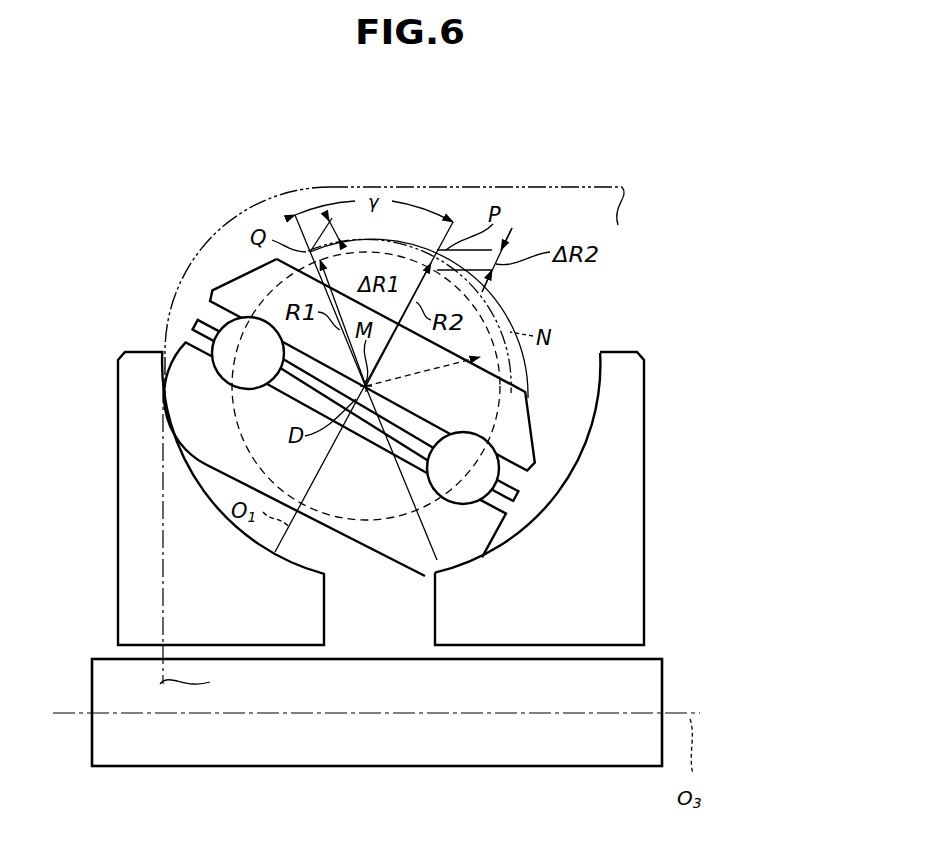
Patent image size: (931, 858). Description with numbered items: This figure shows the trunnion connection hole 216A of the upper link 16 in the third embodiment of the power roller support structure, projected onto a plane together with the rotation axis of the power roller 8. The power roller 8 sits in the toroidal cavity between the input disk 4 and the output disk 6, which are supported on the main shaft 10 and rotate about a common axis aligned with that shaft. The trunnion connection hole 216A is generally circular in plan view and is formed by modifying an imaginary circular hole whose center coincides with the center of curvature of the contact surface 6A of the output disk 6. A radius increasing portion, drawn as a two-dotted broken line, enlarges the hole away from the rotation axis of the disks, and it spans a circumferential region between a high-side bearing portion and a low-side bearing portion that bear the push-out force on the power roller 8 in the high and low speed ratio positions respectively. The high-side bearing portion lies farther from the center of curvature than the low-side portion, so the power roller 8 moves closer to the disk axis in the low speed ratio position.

The main shaft 10 is at (393, 738).
The input disk 4 is at (135, 482).
The output disk 6 is at (590, 498).
The contact surface 6A is at (533, 512).
The power roller 8 is at (183, 346).
The upper link 16 is at (455, 187).
The trunnion connection hole 216A is at (498, 300).